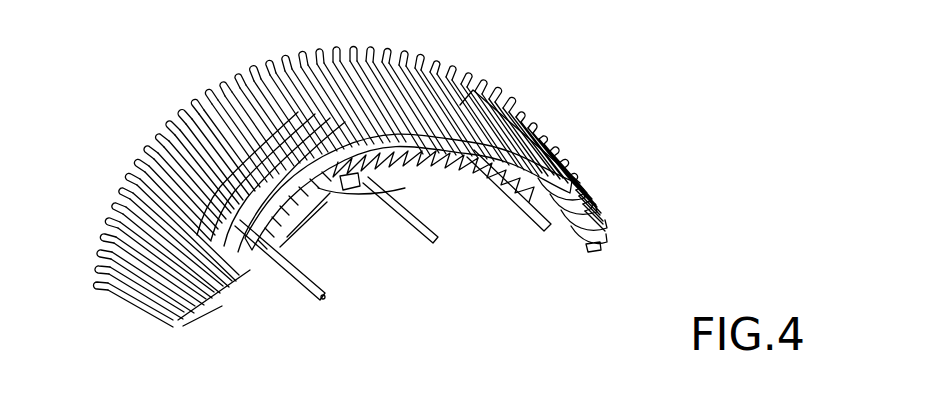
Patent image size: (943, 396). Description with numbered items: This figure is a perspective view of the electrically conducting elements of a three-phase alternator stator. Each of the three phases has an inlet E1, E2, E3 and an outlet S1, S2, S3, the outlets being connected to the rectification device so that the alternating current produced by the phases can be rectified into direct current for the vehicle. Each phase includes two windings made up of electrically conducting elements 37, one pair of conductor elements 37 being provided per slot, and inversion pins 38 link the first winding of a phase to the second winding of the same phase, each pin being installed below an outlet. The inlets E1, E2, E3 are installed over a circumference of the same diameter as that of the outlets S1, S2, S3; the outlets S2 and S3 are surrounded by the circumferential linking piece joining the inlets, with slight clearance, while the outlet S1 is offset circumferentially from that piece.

The electrically conducting elements 37 is at (158, 297).
The inversion pins 38 is at (466, 178).
The inlet E1 is at (342, 183).
The inlet E2 is at (477, 93).
The inlet E3 is at (583, 201).
The outlet S1 is at (325, 297).
The outlet S2 is at (427, 240).
The outlet S3 is at (547, 227).